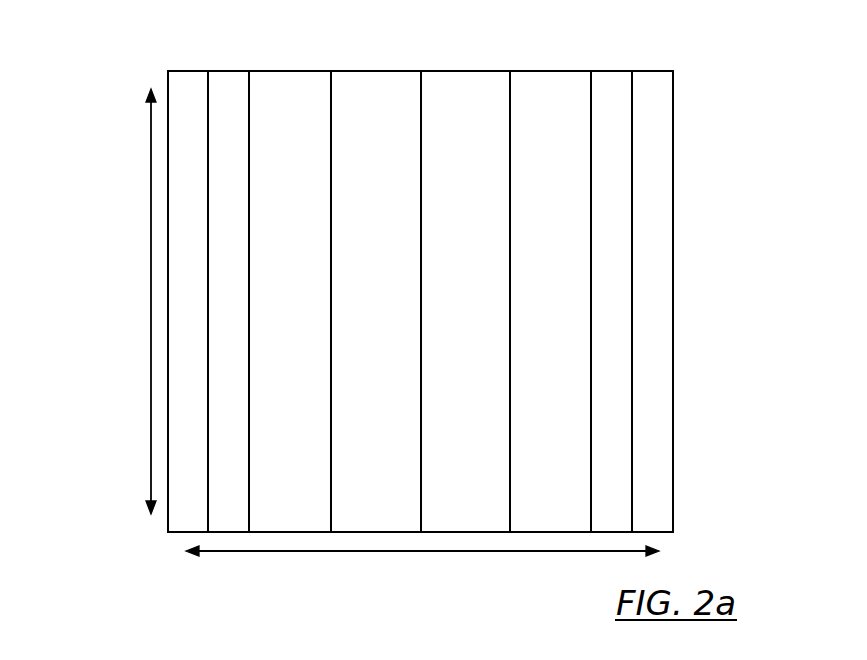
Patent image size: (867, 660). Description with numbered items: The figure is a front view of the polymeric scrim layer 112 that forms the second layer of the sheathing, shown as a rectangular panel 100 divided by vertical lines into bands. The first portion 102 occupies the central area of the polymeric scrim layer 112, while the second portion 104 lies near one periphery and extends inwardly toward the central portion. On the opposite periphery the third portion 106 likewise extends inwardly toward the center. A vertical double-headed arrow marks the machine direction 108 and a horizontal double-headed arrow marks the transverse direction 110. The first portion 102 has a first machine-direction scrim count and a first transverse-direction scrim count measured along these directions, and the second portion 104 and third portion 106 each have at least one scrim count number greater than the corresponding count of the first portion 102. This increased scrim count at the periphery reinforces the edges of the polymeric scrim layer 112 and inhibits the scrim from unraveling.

The semiconductor structure 100 is at (96, 360).
The first portion 102 is at (331, 64).
The second portion 104 is at (249, 64).
The third portion 106 is at (591, 64).
The machine direction 108 is at (150, 465).
The transverse direction 110 is at (243, 552).
The polymeric scrim layer 112 is at (674, 193).